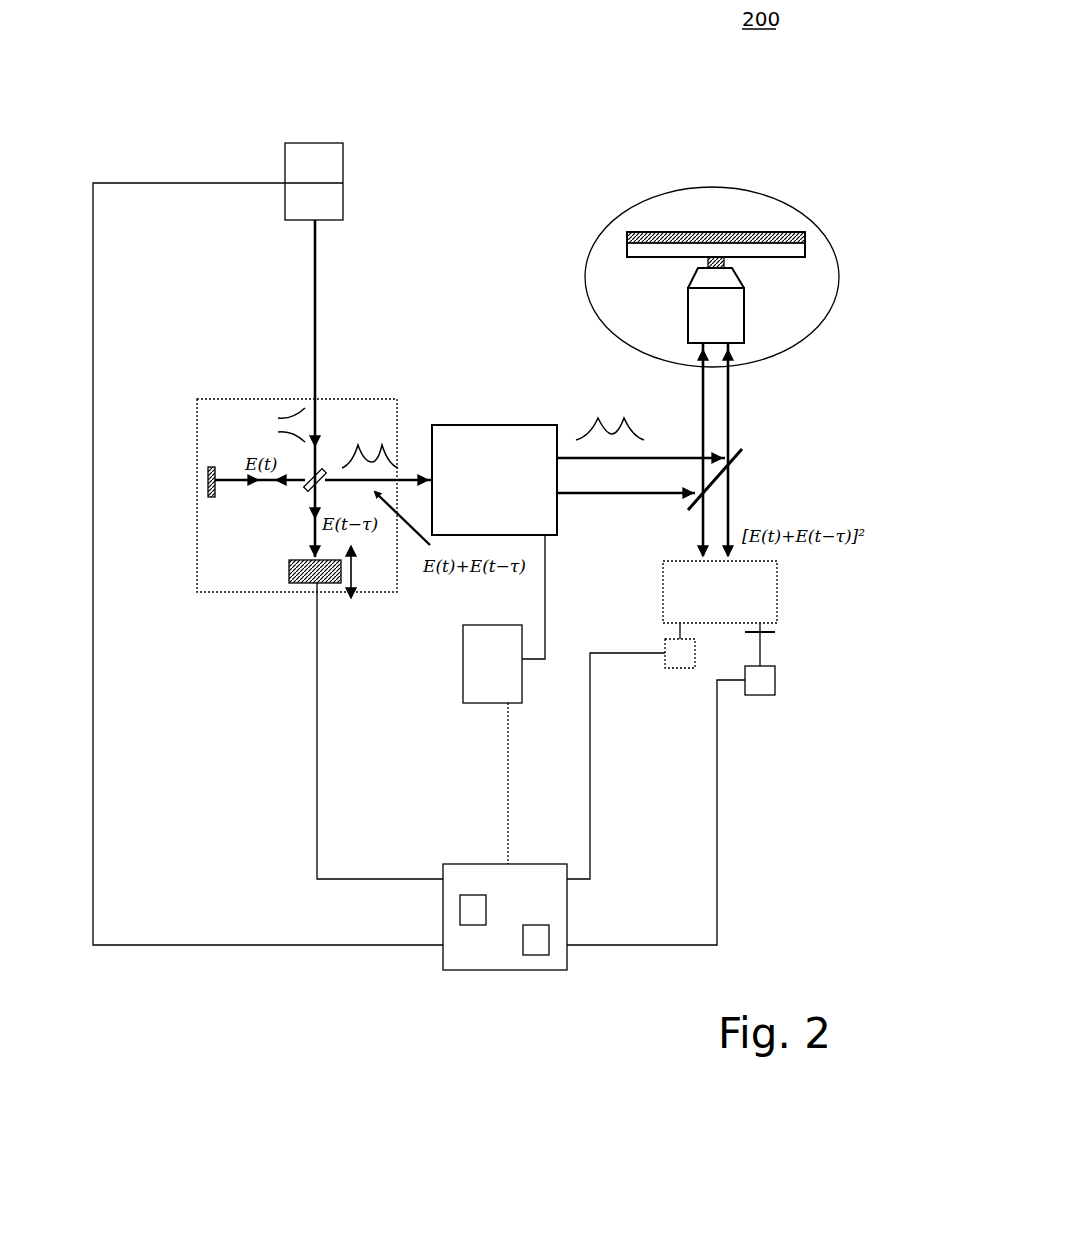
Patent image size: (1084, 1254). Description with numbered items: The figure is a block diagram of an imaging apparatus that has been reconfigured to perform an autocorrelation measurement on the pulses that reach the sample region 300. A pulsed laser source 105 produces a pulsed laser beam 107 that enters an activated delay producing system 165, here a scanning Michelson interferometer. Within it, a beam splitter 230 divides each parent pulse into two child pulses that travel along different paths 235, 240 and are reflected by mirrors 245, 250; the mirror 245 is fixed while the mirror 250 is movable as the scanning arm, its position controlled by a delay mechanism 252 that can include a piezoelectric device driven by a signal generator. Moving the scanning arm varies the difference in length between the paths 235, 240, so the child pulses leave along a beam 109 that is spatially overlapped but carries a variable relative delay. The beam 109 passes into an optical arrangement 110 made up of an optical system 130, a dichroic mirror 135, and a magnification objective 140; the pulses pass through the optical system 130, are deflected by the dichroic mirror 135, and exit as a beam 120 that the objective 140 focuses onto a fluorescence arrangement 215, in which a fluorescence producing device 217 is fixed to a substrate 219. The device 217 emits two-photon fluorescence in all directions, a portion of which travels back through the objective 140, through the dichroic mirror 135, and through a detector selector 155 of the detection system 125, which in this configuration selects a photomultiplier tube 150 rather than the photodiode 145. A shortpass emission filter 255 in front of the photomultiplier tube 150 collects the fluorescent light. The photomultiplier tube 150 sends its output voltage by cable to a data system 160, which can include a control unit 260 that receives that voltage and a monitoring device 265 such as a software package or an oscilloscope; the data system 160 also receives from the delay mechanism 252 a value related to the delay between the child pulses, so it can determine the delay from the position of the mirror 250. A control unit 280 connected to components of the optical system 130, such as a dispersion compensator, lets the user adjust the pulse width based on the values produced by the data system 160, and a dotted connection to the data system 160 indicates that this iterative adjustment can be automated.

The pulsed laser source 105 is at (343, 172).
The pulsed laser beam 107 is at (315, 316).
The beam 109 is at (397, 443).
The optical arrangement 110 is at (550, 296).
The beam 120 is at (708, 260).
The detection system 125 is at (858, 677).
The optical system 130 is at (483, 425).
The dichroic mirror 135 is at (742, 452).
The magnification objective 140 is at (745, 310).
The photodiode 145 is at (678, 668).
The photomultiplier tube 150 is at (760, 695).
The detector selector 155 is at (777, 605).
The data system 160 is at (478, 866).
The delay producing system 165 is at (190, 395).
The fluorescence arrangement 215 is at (826, 242).
The fluorescence producing device 217 is at (790, 232).
The substrate 219 is at (785, 258).
The beam splitter 230 is at (305, 492).
The path 235 is at (243, 472).
The path 240 is at (313, 522).
The mirror 245 is at (208, 497).
The mirror 250 is at (300, 583).
The delay mechanism 252 is at (348, 586).
The shortpass emission filter 255 is at (777, 632).
The control unit 260 is at (473, 925).
The monitoring device 265 is at (535, 955).
The control unit 280 is at (463, 660).
The sample region 300 is at (650, 200).